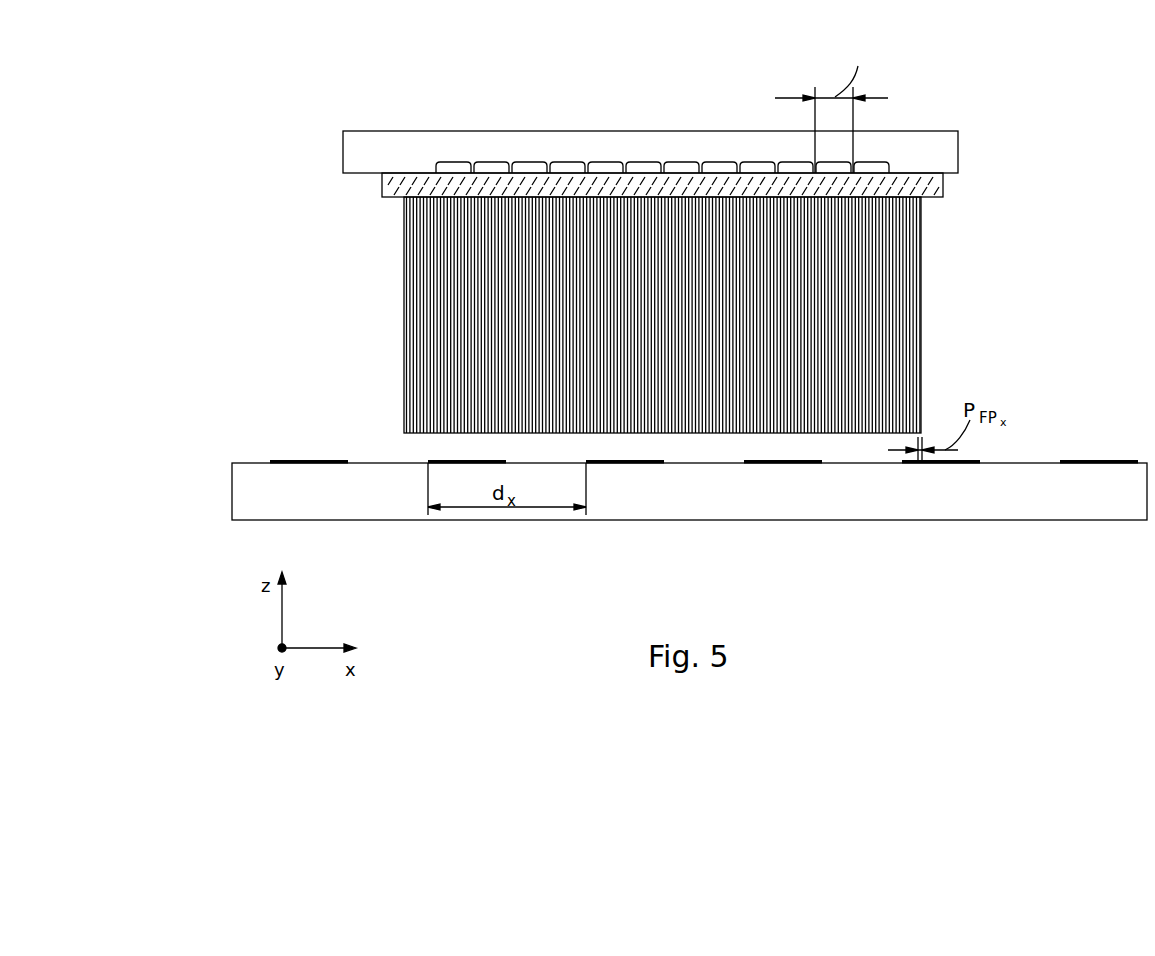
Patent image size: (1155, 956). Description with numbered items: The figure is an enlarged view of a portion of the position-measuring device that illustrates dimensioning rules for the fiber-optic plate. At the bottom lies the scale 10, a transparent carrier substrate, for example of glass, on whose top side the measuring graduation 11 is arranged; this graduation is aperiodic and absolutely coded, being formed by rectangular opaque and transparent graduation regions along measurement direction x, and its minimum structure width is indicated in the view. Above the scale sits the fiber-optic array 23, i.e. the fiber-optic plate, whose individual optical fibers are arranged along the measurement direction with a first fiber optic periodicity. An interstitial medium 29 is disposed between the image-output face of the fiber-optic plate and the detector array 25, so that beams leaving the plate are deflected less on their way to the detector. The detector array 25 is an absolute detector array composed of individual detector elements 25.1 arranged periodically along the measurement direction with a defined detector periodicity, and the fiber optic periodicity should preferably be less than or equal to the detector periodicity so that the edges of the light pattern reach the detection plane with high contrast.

The scale 10 is at (1015, 512).
The measuring graduation 11 is at (302, 460).
The fiber-optic array 23 is at (402, 275).
The detector array 25 is at (952, 152).
The detector element 25.1 is at (507, 162).
The interstitial medium 29 is at (384, 187).